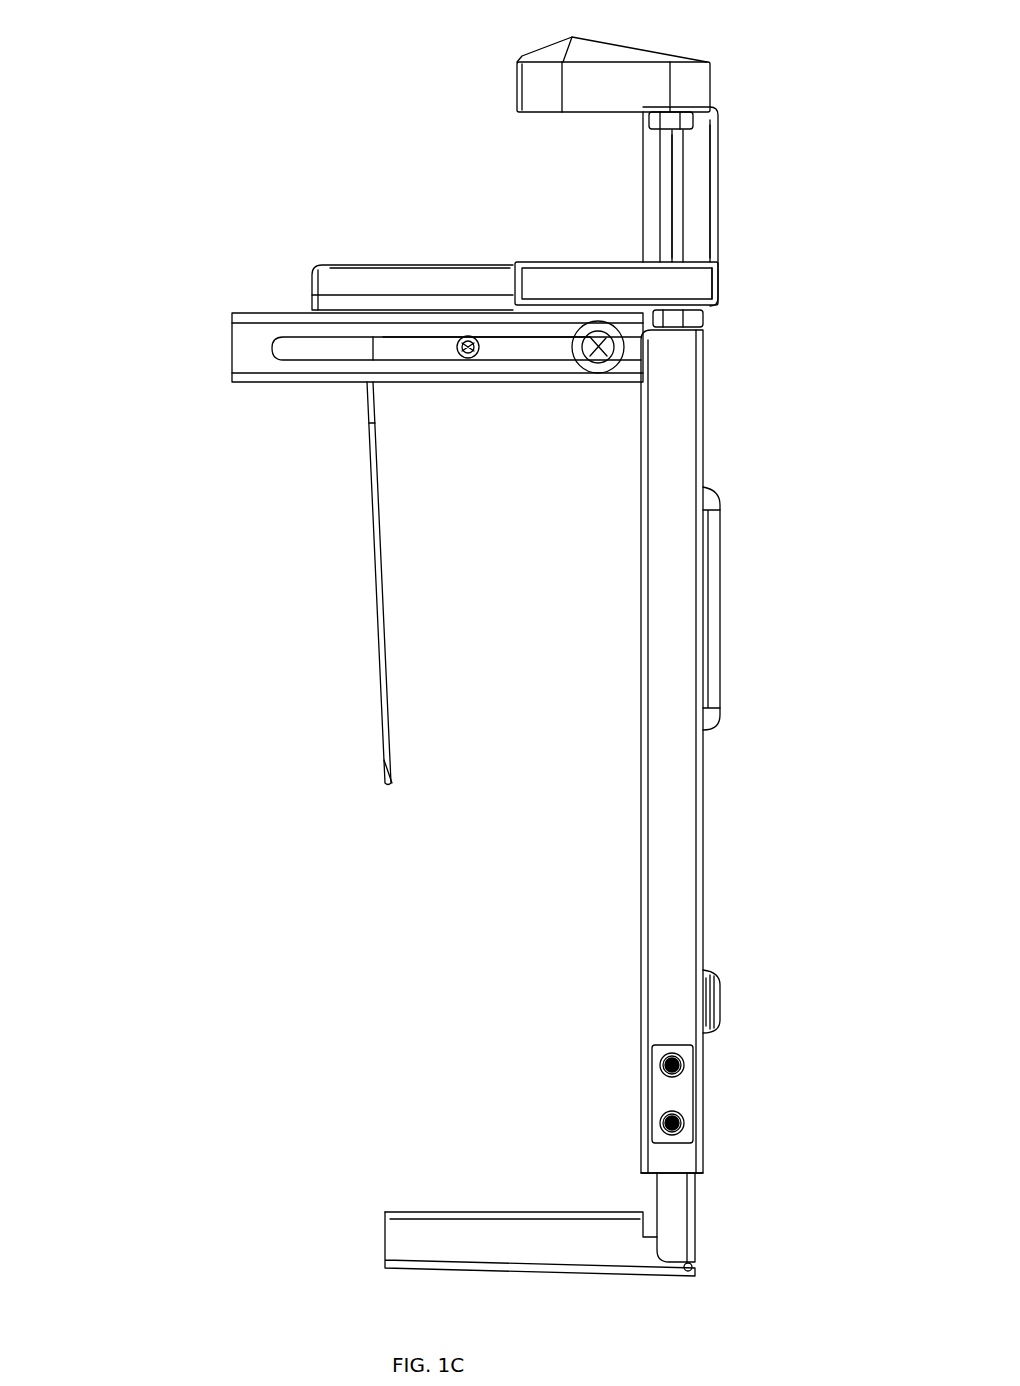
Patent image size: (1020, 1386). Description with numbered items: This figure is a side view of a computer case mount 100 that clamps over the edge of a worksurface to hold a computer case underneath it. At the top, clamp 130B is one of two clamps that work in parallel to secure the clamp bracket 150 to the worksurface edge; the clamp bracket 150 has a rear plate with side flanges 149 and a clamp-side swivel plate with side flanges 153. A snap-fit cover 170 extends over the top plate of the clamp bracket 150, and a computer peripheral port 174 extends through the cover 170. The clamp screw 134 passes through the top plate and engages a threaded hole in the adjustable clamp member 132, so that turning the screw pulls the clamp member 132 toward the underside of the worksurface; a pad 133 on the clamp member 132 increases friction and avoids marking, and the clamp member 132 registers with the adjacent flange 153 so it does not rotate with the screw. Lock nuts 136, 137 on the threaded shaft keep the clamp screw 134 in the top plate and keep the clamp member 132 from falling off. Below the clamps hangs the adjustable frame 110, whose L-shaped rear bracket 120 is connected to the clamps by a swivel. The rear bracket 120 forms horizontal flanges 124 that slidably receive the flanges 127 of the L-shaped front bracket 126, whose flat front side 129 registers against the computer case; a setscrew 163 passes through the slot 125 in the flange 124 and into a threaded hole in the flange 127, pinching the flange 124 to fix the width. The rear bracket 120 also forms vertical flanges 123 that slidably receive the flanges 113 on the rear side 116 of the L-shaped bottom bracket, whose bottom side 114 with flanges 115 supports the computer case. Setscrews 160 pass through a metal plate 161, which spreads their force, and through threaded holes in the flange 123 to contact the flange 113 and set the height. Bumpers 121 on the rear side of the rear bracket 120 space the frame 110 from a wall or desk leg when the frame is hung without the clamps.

The computer case mount 100 is at (136, 95).
The adjustable frame 110 is at (682, 455).
The flanges of L-shaped bottom bracket 113 is at (680, 1215).
The bottom side 114 is at (440, 1262).
The flanges of bottom side 115 is at (503, 1210).
The rear side 116 is at (690, 1265).
The L-shaped rear bracket 120 is at (675, 795).
The bumpers 121 is at (712, 998).
The flanges of L-shaped rear bracket 123 is at (688, 1160).
The flanges of frame-side swivel plate 124 is at (245, 338).
The slot 125 is at (272, 345).
The L-shaped front bracket 126 is at (380, 575).
The flanges of L-shaped front bracket 127 is at (538, 352).
The front side 129 is at (390, 740).
The clamp 130B is at (685, 162).
The adjustable clamp member 132 is at (693, 293).
The pads 133 is at (607, 263).
The clamp screw 134 is at (677, 203).
The lock nut 136 is at (690, 317).
The lock nut 137 is at (690, 118).
The side flanges of rear plate 149 is at (693, 243).
The clamp bracket 150 is at (355, 265).
The side flanges of clamp-side swivel plate 153 is at (387, 280).
The setscrews 160 is at (668, 1125).
The metal plate 161 is at (683, 1097).
The setscrew 163 is at (600, 352).
The snap-fit cover 170 is at (620, 52).
The computer peripheral port 174 is at (517, 82).